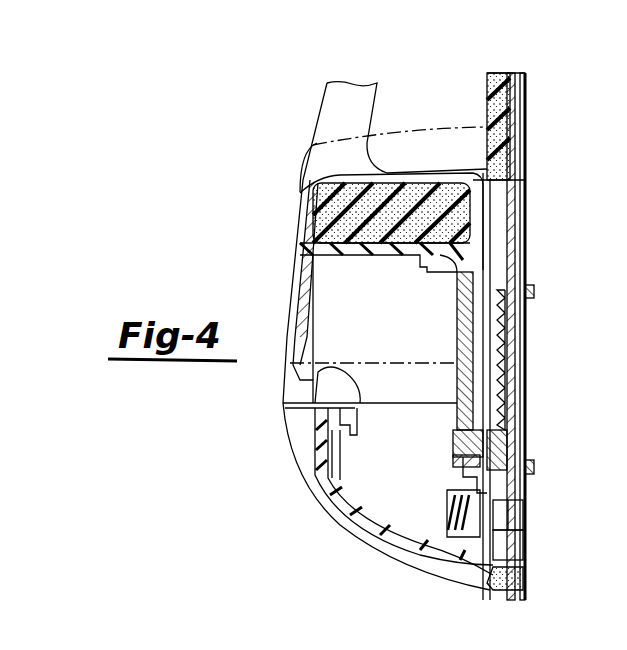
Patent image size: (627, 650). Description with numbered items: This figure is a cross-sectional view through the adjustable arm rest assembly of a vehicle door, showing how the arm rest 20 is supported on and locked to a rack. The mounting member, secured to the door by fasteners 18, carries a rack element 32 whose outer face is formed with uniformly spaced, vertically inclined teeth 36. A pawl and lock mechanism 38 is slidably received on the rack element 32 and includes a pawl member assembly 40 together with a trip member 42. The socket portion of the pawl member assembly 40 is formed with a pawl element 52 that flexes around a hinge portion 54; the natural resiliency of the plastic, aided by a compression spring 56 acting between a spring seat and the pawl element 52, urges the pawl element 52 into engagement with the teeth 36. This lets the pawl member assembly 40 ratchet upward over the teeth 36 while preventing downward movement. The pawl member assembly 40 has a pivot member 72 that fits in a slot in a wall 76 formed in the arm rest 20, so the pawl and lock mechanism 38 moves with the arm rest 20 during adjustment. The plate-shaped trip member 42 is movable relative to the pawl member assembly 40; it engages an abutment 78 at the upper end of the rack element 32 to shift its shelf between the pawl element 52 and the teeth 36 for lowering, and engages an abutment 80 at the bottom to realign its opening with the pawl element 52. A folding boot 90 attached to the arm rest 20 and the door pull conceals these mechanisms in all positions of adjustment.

The arm rest 20 is at (300, 240).
The folding boot 90 is at (342, 383).
The wall 76 is at (457, 340).
The abutment 78 is at (497, 210).
The fasteners 18 is at (530, 290).
The teeth 36 is at (493, 303).
The rack element 32 is at (497, 355).
The trip member 42 is at (493, 450).
The pivot member 72 is at (453, 434).
The pawl and lock mechanism 38 is at (445, 462).
The pawl member assembly 40 is at (447, 492).
The hinge portion 54 is at (540, 462).
The compression spring 56 is at (423, 553).
The pawl element 52 is at (493, 510).
The abutment 80 is at (490, 533).